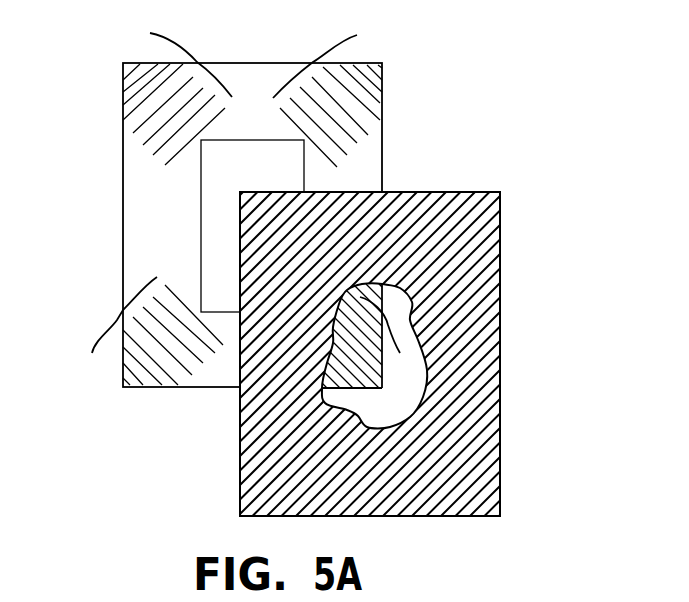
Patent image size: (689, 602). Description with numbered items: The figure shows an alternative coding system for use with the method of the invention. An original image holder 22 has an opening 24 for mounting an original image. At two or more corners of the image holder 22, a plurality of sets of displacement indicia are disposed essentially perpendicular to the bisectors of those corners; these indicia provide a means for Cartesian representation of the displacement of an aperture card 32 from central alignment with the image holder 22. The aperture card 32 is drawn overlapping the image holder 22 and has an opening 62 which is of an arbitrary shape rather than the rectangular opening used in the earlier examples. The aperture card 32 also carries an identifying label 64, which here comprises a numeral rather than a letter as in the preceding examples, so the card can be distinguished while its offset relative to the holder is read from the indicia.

The original image holder 22 is at (125, 156).
The opening 24 is at (201, 230).
The aperture card 32 is at (495, 365).
The opening 62 is at (362, 430).
The identifying label 64 is at (472, 475).